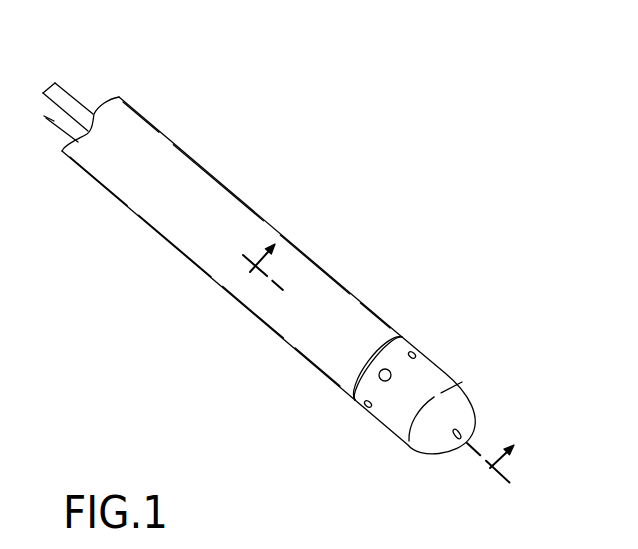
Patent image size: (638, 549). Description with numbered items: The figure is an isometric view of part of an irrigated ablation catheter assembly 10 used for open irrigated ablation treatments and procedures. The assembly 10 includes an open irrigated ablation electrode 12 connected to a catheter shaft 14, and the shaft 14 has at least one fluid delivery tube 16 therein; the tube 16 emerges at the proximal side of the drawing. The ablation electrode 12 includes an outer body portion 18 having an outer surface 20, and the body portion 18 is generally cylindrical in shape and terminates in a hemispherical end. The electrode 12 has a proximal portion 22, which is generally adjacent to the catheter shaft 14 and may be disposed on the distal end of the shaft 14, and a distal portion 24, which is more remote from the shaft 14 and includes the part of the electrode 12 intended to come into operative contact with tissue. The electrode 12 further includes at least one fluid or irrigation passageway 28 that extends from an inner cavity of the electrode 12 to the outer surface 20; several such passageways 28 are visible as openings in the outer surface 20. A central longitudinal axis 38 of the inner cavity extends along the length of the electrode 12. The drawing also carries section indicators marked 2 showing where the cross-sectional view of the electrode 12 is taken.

The irrigated ablation catheter assembly 10 is at (290, 258).
The open irrigated ablation electrode 12 is at (400, 386).
The catheter shaft 14 is at (232, 248).
The fluid delivery tube 16 is at (76, 72).
The outer body portion 18 is at (358, 439).
The outer surface 20 is at (429, 448).
The proximal portion 22 is at (385, 333).
The distal portion 24 is at (446, 395).
The irrigation passageway 28 is at (363, 429).
The central longitudinal axis 38 is at (517, 430).
The section line of FIG. 2 is at (377, 369).